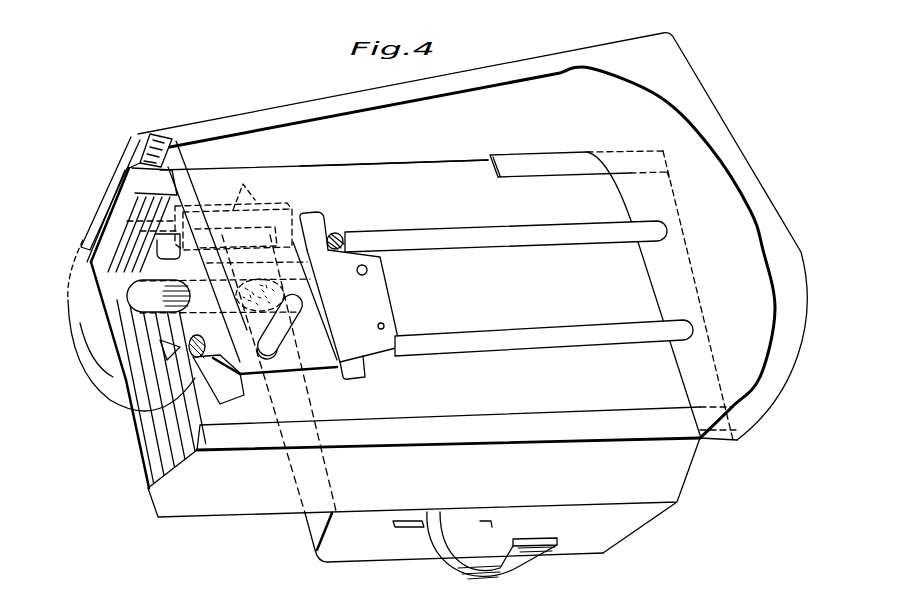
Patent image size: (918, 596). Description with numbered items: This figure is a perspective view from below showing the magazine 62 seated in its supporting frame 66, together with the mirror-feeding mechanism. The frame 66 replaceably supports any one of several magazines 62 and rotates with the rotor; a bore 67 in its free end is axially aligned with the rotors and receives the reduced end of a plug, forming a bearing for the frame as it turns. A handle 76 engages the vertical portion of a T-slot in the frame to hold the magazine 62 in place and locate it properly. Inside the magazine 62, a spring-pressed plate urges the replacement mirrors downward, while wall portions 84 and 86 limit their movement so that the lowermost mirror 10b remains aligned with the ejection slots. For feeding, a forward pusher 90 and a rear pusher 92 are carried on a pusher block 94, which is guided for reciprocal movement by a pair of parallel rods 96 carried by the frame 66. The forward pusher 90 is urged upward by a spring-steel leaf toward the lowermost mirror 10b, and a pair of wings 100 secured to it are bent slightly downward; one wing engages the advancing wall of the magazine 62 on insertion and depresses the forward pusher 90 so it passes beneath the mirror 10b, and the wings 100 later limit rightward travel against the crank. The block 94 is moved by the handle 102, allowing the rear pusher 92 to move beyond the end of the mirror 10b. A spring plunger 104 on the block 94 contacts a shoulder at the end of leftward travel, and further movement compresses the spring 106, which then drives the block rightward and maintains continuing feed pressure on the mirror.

The supporting frame 66 is at (672, 44).
The wall portion 86 is at (107, 203).
The bore 67 is at (100, 282).
The spring plunger 104 is at (133, 293).
The rear pusher 92 is at (160, 358).
The pusher block 94 is at (262, 205).
The spring 106 is at (283, 283).
The forward pusher 90 is at (383, 292).
The wings 100 is at (318, 215).
The handle 102 is at (297, 313).
The wall portion 84 is at (540, 170).
The parallel rods 96 is at (547, 323).
The magazine 62 is at (705, 472).
The handle 76 is at (543, 563).
The lowermost mirror 10b is at (425, 163).